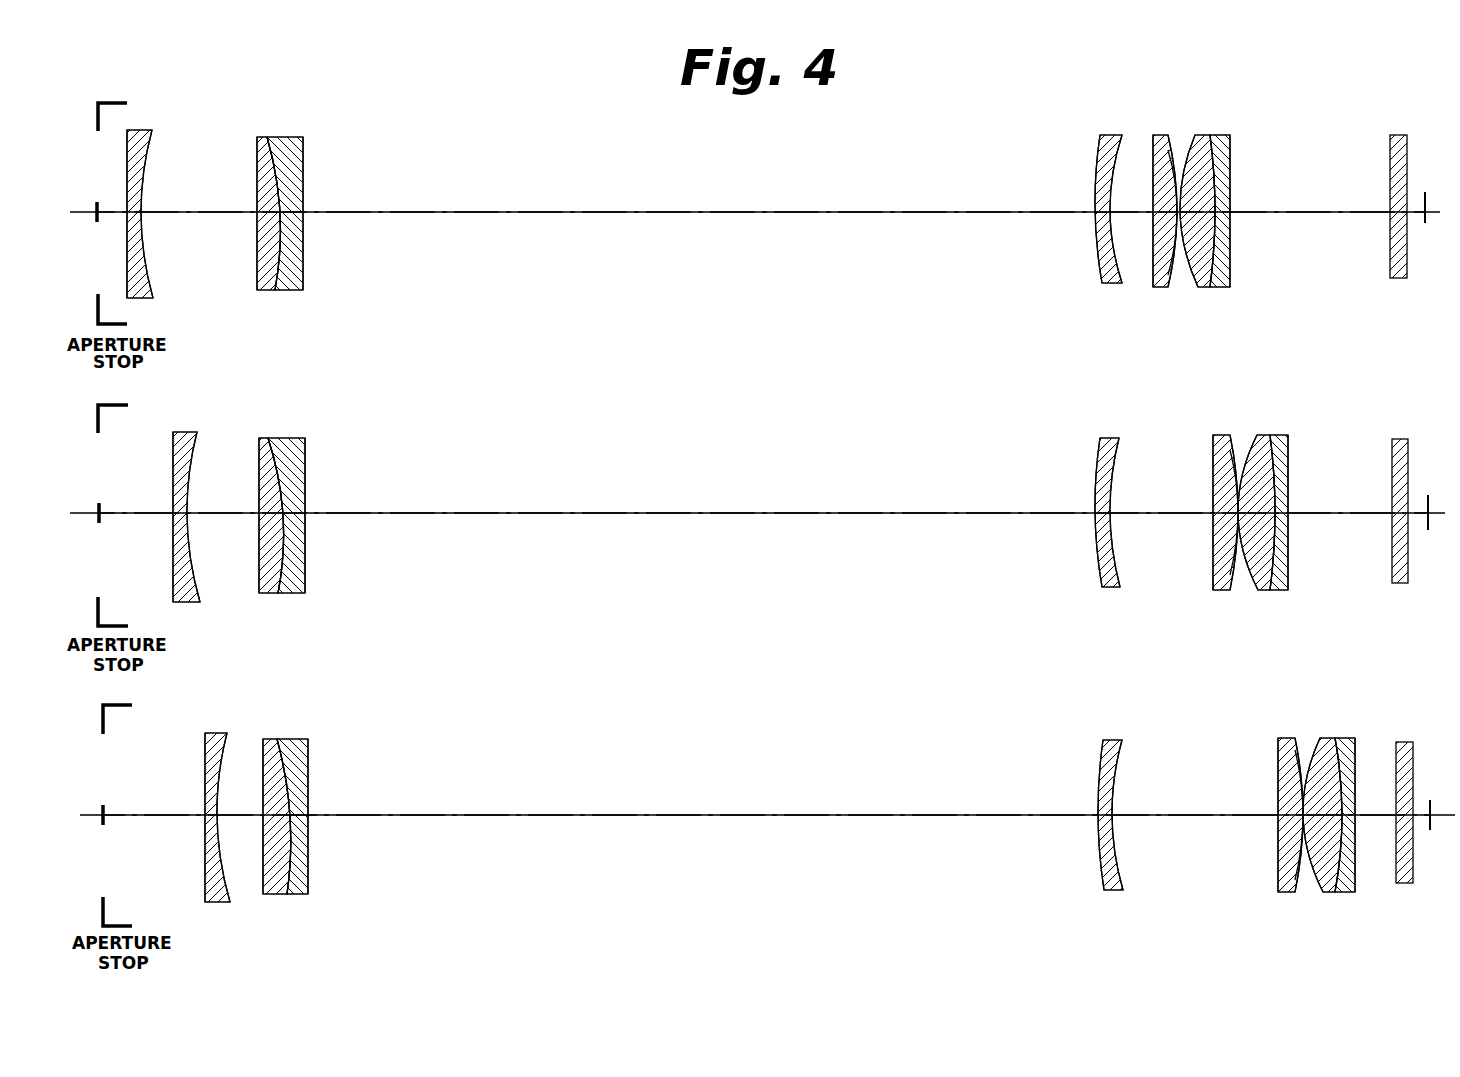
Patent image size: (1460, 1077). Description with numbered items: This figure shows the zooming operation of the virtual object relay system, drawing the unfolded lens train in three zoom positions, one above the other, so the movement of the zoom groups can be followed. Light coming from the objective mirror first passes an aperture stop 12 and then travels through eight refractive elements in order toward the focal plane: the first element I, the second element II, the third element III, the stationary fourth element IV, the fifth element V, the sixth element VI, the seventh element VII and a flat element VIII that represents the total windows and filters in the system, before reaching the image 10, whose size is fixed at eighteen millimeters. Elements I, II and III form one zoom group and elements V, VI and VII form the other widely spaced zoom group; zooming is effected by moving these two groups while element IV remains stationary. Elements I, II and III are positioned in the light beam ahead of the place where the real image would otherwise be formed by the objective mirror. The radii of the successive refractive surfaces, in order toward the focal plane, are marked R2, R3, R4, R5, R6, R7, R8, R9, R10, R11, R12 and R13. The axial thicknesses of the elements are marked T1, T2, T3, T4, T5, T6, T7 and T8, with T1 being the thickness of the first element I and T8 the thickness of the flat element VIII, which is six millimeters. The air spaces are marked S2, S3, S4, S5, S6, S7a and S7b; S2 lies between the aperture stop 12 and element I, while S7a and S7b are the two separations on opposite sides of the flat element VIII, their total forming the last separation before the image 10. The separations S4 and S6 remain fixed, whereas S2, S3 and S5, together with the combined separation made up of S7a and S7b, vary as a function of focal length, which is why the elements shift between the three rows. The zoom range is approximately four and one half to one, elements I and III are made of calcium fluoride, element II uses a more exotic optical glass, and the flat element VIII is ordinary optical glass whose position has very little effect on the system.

The image 10 is at (1425, 223).
The aperture stop 12 is at (107, 103).
The first lens element I is at (140, 300).
The second lens element II is at (266, 292).
The third lens element III is at (290, 292).
The fourth lens element IV is at (1110, 285).
The fifth lens element V is at (1160, 289).
The sixth lens element VI is at (1205, 289).
The seventh lens element VII is at (1222, 289).
The flat element VIII is at (1398, 280).
The radius of second surface R2 is at (127, 130).
The radius of third surface R3 is at (150, 150).
The radius of fourth surface R4 is at (258, 165).
The radius of fifth surface R5 is at (276, 150).
The radius of sixth surface R6 is at (302, 160).
The radius of seventh surface R7 is at (1098, 160).
The radius of eighth surface R8 is at (1120, 155).
The radius of ninth surface R9 is at (1155, 160).
The radius of tenth surface R10 is at (1178, 150).
The radius of eleventh surface R11 is at (1190, 160).
The radius of twelfth surface R12 is at (1210, 160).
The radius of thirteenth surface R13 is at (1230, 160).
The second air space S2 is at (108, 212).
The third air space S3 is at (197, 212).
The fourth air space S4 is at (732, 212).
The fifth air space S5 is at (1135, 212).
The sixth air space S6 is at (1183, 197).
The first part of seventh separation S7a is at (1310, 212).
The second part of seventh separation S7b is at (1417, 210).
The thickness of first element T1 is at (135, 215).
The thickness of second element T2 is at (272, 220).
The thickness of third element T3 is at (296, 228).
The thickness of fourth element T4 is at (1105, 215).
The thickness of fifth element T5 is at (1160, 218).
The thickness of sixth element T6 is at (1212, 240).
The thickness of seventh element T7 is at (1222, 222).
The thickness of eighth element T8 is at (1395, 212).